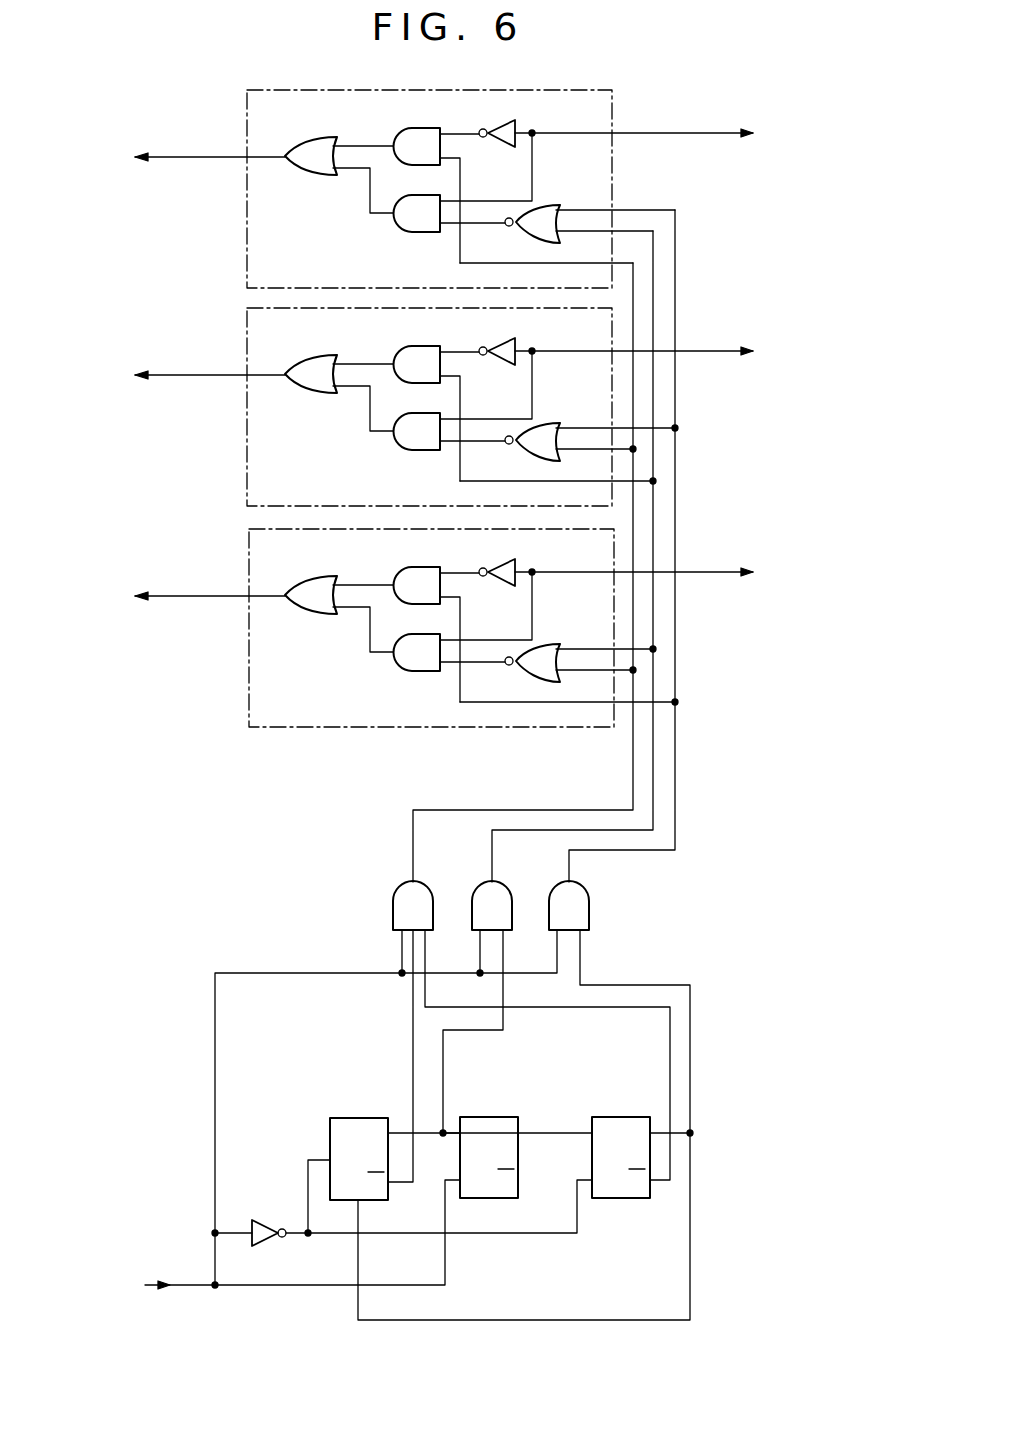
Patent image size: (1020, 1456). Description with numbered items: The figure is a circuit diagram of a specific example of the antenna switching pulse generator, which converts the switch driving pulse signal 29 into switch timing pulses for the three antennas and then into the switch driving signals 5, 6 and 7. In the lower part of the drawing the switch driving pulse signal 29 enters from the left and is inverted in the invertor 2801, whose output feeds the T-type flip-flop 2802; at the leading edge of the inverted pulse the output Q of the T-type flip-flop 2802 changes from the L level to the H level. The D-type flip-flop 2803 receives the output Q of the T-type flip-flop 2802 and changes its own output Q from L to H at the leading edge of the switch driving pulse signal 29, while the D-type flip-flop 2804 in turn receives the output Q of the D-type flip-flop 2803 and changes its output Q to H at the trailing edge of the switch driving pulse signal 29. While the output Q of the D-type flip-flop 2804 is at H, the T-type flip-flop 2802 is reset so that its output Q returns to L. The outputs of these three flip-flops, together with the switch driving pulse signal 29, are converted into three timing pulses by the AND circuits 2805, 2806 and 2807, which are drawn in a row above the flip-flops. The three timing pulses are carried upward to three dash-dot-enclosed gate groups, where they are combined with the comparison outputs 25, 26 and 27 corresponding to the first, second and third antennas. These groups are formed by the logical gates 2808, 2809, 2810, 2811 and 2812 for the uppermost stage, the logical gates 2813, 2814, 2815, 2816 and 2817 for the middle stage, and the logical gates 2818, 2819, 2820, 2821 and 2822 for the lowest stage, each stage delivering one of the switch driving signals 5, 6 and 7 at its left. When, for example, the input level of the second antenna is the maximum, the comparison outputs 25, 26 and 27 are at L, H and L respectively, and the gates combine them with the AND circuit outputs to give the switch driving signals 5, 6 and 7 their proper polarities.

The switch driving signal 5 is at (194, 157).
The switch driving signal 6 is at (194, 375).
The switch driving signal 7 is at (194, 596).
The comparison output 25 is at (658, 133).
The comparison output 26 is at (658, 351).
The comparison output 27 is at (658, 572).
The switch driving pulse signal 29 is at (156, 1285).
The invertor 2801 is at (258, 1220).
The T-type flip-flop 2802 is at (365, 1117).
The D-type flip-flop 2803 is at (500, 1117).
The D-type flip-flop 2804 is at (626, 1117).
The AND circuit 2805 is at (386, 902).
The AND circuit 2806 is at (475, 881).
The AND circuit 2807 is at (592, 903).
The logical gate 2808 is at (300, 137).
The logical gate 2809 is at (410, 129).
The logical gate 2810 is at (511, 118).
The logical gate 2811 is at (403, 233).
The logical gate 2812 is at (550, 203).
The logical gate 2813 is at (334, 351).
The logical gate 2814 is at (444, 346).
The logical gate 2815 is at (537, 336).
The logical gate 2816 is at (400, 457).
The logical gate 2817 is at (555, 411).
The logical gate 2818 is at (334, 572).
The logical gate 2819 is at (444, 567).
The logical gate 2820 is at (537, 557).
The logical gate 2821 is at (400, 678).
The logical gate 2822 is at (555, 632).